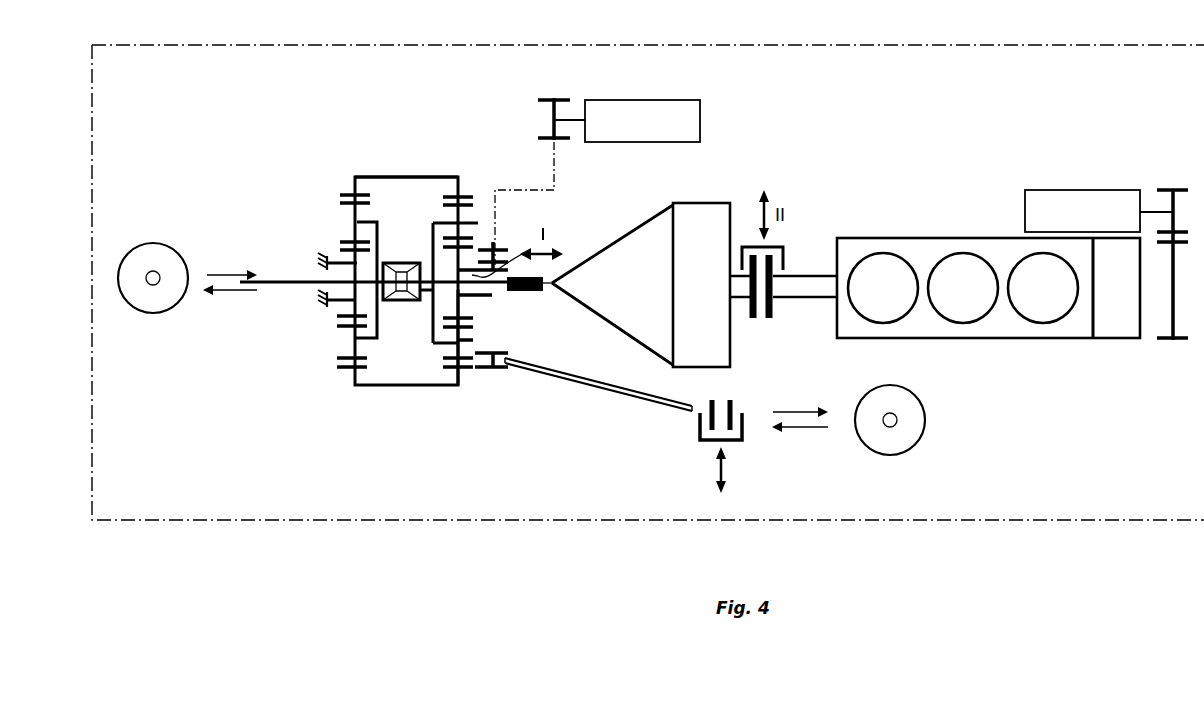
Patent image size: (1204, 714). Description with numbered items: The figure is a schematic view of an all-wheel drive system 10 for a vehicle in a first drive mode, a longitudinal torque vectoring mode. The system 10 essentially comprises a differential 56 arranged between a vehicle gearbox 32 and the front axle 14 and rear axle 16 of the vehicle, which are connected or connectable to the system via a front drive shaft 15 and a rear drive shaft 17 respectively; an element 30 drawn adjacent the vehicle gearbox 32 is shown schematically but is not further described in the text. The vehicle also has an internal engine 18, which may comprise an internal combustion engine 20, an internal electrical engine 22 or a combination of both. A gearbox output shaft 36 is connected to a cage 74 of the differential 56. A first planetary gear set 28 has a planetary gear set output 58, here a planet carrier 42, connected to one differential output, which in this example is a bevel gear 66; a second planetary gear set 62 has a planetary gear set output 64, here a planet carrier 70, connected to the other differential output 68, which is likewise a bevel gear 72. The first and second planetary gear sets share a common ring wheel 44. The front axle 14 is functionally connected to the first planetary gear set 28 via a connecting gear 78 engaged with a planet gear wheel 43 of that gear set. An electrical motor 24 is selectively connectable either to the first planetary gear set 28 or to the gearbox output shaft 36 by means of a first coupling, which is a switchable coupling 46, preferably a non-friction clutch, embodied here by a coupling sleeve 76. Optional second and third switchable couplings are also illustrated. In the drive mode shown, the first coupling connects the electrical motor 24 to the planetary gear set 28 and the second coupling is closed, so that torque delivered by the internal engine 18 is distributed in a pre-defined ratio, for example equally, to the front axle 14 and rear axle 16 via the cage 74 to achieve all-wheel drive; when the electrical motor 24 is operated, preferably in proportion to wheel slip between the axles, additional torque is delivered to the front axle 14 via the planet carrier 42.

The all-wheel drive system 10 is at (870, 138).
The front axle 14 is at (812, 439).
The front drive shaft 15 is at (633, 400).
The rear axle 16 is at (199, 278).
The rear drive shaft 17 is at (297, 283).
The internal engine 18 is at (1105, 372).
The internal combustion engine 20 is at (988, 288).
The internal electrical engine 22 is at (1106, 265).
The electrical motor 24 is at (619, 120).
The first planetary gear set 28 is at (458, 160).
The variator 30 is at (582, 250).
The vehicle gearbox 32 is at (701, 285).
The gearbox output shaft 36 is at (553, 286).
The planet carrier 42 is at (433, 222).
The planet gear wheel 43 is at (465, 333).
The common ring wheel 44 is at (363, 385).
The switchable coupling 46 is at (517, 209).
The differential 56 is at (402, 324).
The planetary gear set output 58 is at (415, 263).
The second planetary gear set 62 is at (355, 170).
The planetary gear set output 64 is at (360, 270).
The bevel gear 66 is at (413, 302).
The differential output 68 is at (366, 280).
The planet carrier 70 is at (356, 208).
The bevel gear 72 is at (386, 302).
The cage 74 is at (397, 263).
The coupling sleeve 76 is at (556, 236).
The connecting gear 78 is at (497, 370).